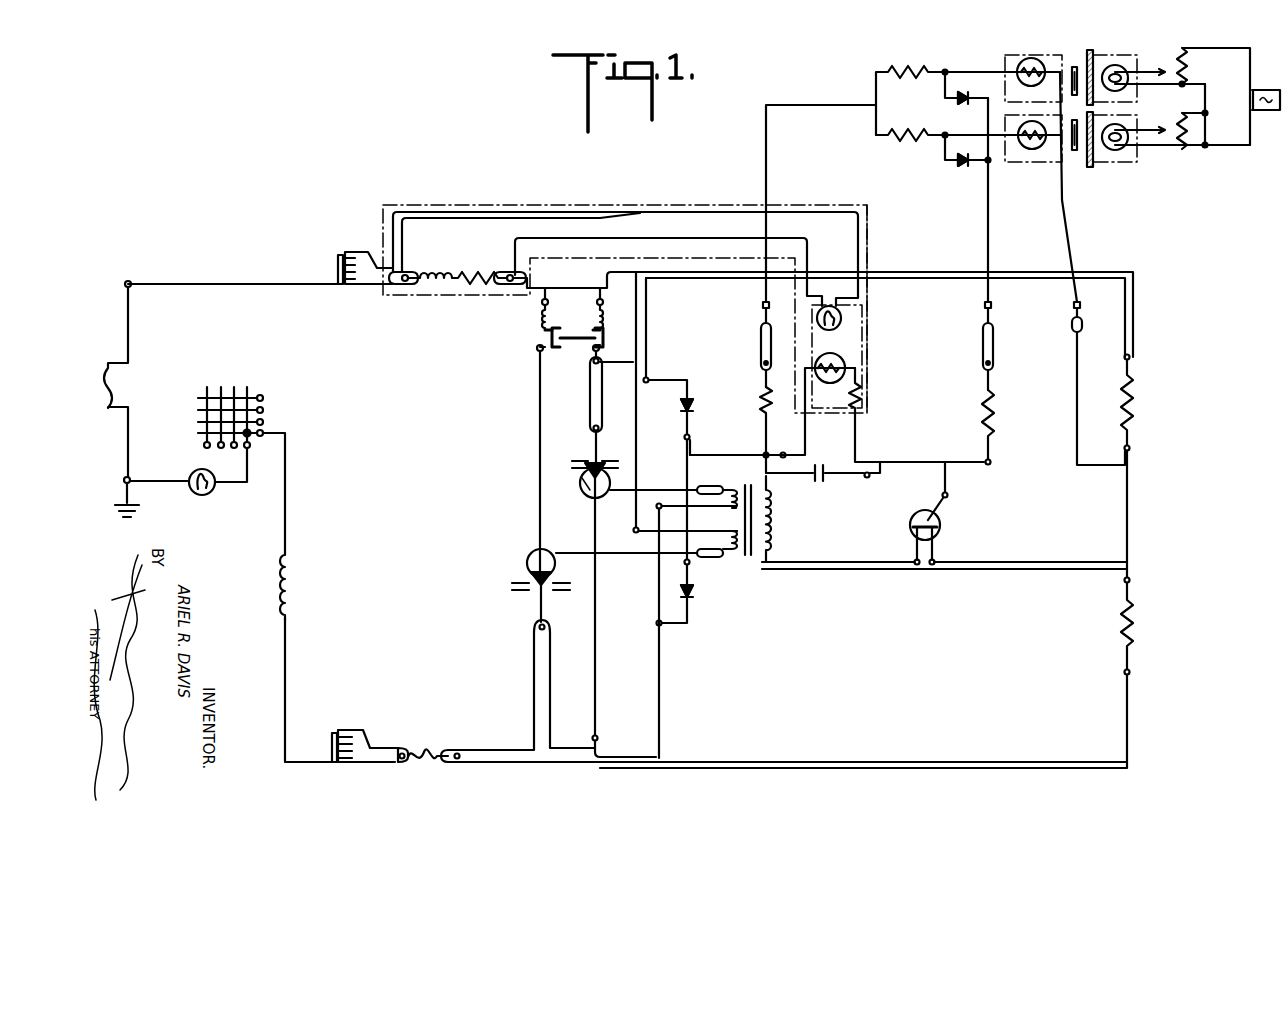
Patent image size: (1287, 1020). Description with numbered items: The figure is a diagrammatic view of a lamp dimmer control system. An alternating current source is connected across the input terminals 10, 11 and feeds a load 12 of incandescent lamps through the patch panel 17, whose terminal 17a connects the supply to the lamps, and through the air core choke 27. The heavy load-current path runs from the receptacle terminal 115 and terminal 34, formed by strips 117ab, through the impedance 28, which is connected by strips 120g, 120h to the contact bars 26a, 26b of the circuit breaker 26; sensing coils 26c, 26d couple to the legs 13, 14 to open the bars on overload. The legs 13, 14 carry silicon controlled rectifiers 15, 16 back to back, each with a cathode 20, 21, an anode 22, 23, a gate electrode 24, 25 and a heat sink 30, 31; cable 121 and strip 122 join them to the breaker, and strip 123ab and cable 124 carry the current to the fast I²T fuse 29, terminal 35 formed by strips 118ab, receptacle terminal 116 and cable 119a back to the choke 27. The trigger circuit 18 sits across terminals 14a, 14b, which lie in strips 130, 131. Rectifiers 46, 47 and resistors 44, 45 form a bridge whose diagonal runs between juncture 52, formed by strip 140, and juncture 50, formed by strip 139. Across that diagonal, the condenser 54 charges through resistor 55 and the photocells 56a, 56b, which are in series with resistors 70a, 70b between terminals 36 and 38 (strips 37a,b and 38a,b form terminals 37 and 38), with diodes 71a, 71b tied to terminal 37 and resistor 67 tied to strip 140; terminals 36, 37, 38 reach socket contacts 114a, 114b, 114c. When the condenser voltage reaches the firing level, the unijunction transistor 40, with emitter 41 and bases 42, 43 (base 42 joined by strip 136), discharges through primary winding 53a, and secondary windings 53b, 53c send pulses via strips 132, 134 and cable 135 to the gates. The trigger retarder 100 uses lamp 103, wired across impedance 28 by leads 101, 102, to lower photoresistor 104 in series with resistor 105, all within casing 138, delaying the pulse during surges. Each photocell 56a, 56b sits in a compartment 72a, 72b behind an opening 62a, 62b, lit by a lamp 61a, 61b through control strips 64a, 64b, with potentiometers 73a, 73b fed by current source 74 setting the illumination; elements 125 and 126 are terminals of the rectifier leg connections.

The input terminal 10 is at (131, 282).
The input terminal 11 is at (130, 478).
The load 12 is at (195, 494).
The leg 13 is at (519, 450).
The leg 14 is at (605, 565).
The terminal 14a is at (641, 276).
The terminal 14b is at (662, 760).
The silicon controlled rectifier 15 is at (527, 573).
The silicon controlled rectifier 16 is at (586, 496).
The patch panel 17 is at (263, 398).
The terminal 17a is at (249, 437).
The trigger circuit 18 is at (940, 454).
The cathode 20 is at (529, 558).
The cathode 21 is at (580, 488).
The anode 22 is at (537, 596).
The anode 23 is at (582, 459).
The gate electrode 24 is at (569, 575).
The gate electrode 25 is at (650, 504).
The circuit breaker 26 is at (499, 341).
The contact bar 26a is at (550, 351).
The contact bar 26b is at (606, 346).
The sensing coil 26c is at (538, 319).
The sensing coil 26d is at (605, 319).
The air core choke 27 is at (293, 576).
The impedance 28 is at (437, 207).
The current limiting fuse 29 is at (426, 750).
The heat sink 30 is at (513, 588).
The heat sink 31 is at (606, 459).
The terminal 34 is at (362, 285).
The terminal 35 is at (372, 763).
The terminal 36 is at (1071, 325).
The terminal 37 is at (1002, 320).
The terminal strip 37a,b is at (993, 345).
The terminal 38 is at (752, 328).
The terminal strip 38a,b is at (760, 352).
The unijunction transistor 40 is at (910, 523).
The emitter 41 is at (940, 506).
The base 42 is at (914, 556).
The base 43 is at (937, 553).
The resistor 44 is at (1136, 404).
The resistor 45 is at (1136, 632).
The rectifier 46 is at (695, 405).
The rectifier 47 is at (695, 602).
The terminal juncture 50 is at (1131, 561).
The terminal juncture 52 is at (696, 443).
The primary winding 53a is at (775, 527).
The secondary winding 53b is at (745, 480).
The secondary winding 53c is at (733, 544).
The condenser 54 is at (819, 483).
The resistor 55 is at (996, 414).
The photocell 56a is at (1033, 150).
The photocell 56b is at (1030, 58).
The lamp 61a is at (1120, 150).
The lamp 61b is at (1118, 66).
The opening 62a is at (1075, 152).
The opening 62b is at (1073, 66).
The light control strip 64a is at (1092, 160).
The light control strip 64b is at (1092, 62).
The resistor 67 is at (762, 402).
The resistor 70a is at (895, 139).
The resistor 70b is at (905, 68).
The diode 71a is at (958, 166).
The diode 71b is at (955, 104).
The lighttight compartment 72a is at (1046, 163).
The lighttight compartment 72b is at (1005, 58).
The potentiometer 73a is at (1186, 150).
The potentiometer 73b is at (1200, 46).
The current source 74 is at (1268, 90).
The trigger retarder 100 is at (869, 265).
The lead 101 is at (722, 238).
The lead 102 is at (683, 212).
The lamp 103 is at (842, 321).
The photoresistor 104 is at (845, 362).
The resistor 105 is at (862, 394).
The socket contact 114a is at (1081, 306).
The socket contact 114b is at (984, 304).
The socket contact 114c is at (762, 304).
The receptacle terminal 115 is at (338, 262).
The receptacle terminal 116 is at (333, 736).
The conducting strips 117ab is at (362, 252).
The conducting strips 118ab is at (368, 738).
The cable 119a is at (288, 650).
The strip 120g is at (538, 301).
The strip 120h is at (605, 301).
The cable 121 is at (539, 395).
The strip 122 is at (590, 406).
The strip 123ab is at (533, 705).
The cable 124 is at (598, 662).
The terminal 125 is at (546, 628).
The terminal 126 is at (600, 432).
The strip 130 is at (1118, 270).
The strip 131 is at (662, 689).
The strip 132 is at (697, 488).
The strip 134 is at (712, 558).
The cable 135 is at (622, 542).
The strip 136 is at (842, 571).
The casing 138 is at (866, 413).
The conducting strip 139 is at (1133, 506).
The conducting strip 140 is at (688, 521).